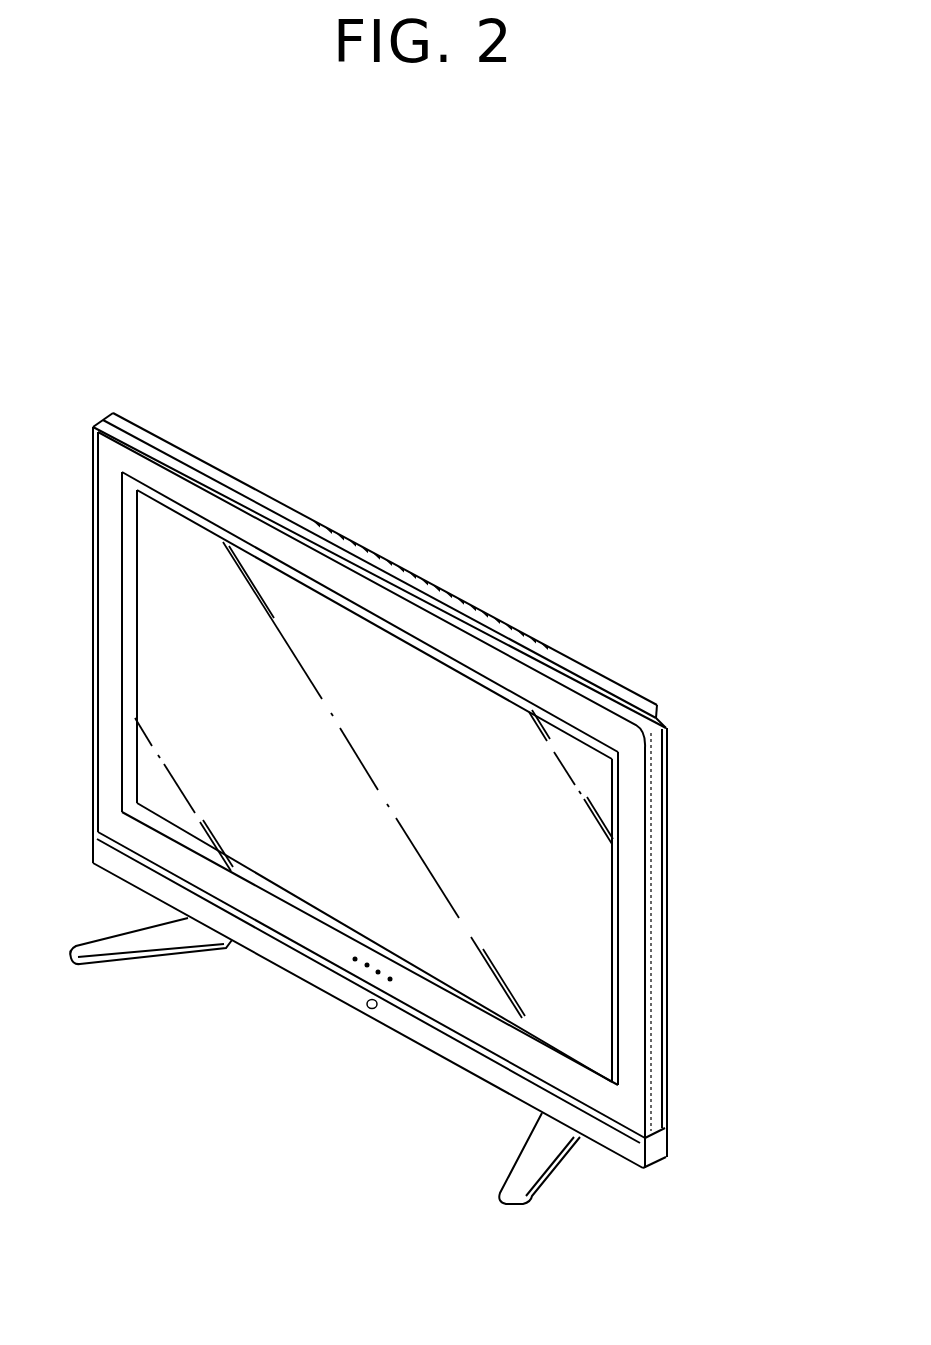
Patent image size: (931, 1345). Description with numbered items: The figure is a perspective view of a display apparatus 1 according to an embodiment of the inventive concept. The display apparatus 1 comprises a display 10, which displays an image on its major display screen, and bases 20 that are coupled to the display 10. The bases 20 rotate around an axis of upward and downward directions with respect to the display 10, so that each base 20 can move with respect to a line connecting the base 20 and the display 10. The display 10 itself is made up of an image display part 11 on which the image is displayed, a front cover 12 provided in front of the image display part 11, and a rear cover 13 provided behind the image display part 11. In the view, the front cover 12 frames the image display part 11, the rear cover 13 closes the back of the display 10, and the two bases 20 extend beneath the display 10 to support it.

The display apparatus 1 is at (517, 510).
The display 10 is at (757, 769).
The image display part 11 is at (594, 914).
The front cover 12 is at (641, 841).
The rear cover 13 is at (663, 771).
The base 20 is at (97, 968).